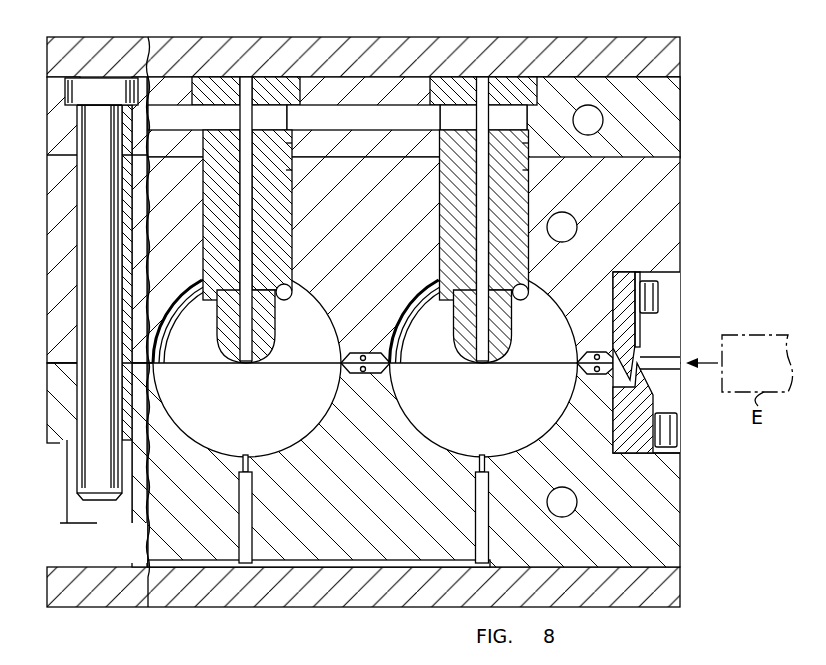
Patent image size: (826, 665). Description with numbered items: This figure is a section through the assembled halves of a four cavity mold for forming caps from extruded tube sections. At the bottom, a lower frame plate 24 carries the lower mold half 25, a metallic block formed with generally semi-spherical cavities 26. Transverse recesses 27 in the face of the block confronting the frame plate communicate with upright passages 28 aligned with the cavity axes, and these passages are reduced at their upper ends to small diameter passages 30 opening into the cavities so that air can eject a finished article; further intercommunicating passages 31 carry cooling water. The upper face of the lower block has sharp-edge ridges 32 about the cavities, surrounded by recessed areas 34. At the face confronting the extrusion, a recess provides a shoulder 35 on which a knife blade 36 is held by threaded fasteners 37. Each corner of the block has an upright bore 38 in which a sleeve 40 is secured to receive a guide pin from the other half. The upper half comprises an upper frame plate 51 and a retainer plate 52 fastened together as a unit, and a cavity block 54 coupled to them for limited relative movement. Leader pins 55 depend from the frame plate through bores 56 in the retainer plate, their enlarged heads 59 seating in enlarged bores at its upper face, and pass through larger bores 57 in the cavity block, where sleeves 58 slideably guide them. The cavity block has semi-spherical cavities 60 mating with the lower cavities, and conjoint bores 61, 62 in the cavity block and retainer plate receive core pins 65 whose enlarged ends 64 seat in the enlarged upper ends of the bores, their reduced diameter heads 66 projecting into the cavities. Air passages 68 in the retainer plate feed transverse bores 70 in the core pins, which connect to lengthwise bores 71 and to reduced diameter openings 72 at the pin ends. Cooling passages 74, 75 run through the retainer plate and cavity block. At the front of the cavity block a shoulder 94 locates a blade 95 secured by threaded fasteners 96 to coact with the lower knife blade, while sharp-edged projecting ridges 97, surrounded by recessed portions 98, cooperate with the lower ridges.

The lower frame plate 24 is at (671, 590).
The lower mold half 25 is at (668, 512).
The semi-spherical cavities 26 is at (306, 436).
The transverse recesses 27 is at (378, 562).
The upright passages 28 is at (253, 530).
The small diameter passages 30 is at (246, 458).
The intercommunicating passages 31 is at (577, 503).
The sharp-edge ridges 32 is at (343, 366).
The recessed areas 34 is at (363, 373).
The shoulder 35 is at (678, 452).
The knife blade 36 is at (653, 393).
The threaded fasteners 37 is at (678, 432).
The upright bores 38 is at (133, 500).
The sleeve 40 is at (72, 432).
The upper frame plate 51 is at (360, 46).
The retainer plate 52 is at (388, 80).
The cavity block 54 is at (668, 193).
The leader pins 55 is at (80, 124).
The bores 56 is at (80, 163).
The bores 57 is at (70, 242).
The sleeves 58 is at (67, 215).
The enlarged heads 59 is at (90, 100).
The semi-spherical cavities 60 is at (333, 325).
The bores 61 is at (292, 171).
The bores 62 is at (290, 143).
The enlarged ends 64 is at (303, 85).
The core pins 65 is at (284, 210).
The reduced diameter heads 66 is at (282, 300).
The air passages 68 is at (363, 117).
The transverse bores 70 is at (337, 117).
The lengthwise bore 71 is at (240, 235).
The reduced diameter openings 72 is at (225, 329).
The passages 74 is at (600, 117).
The passages 75 is at (576, 224).
The shoulder 94 is at (665, 276).
The blade 95 is at (640, 337).
The threaded fasteners 96 is at (658, 297).
The sharp-edged projecting ridges 97 is at (343, 360).
The recessed portions 98 is at (363, 354).